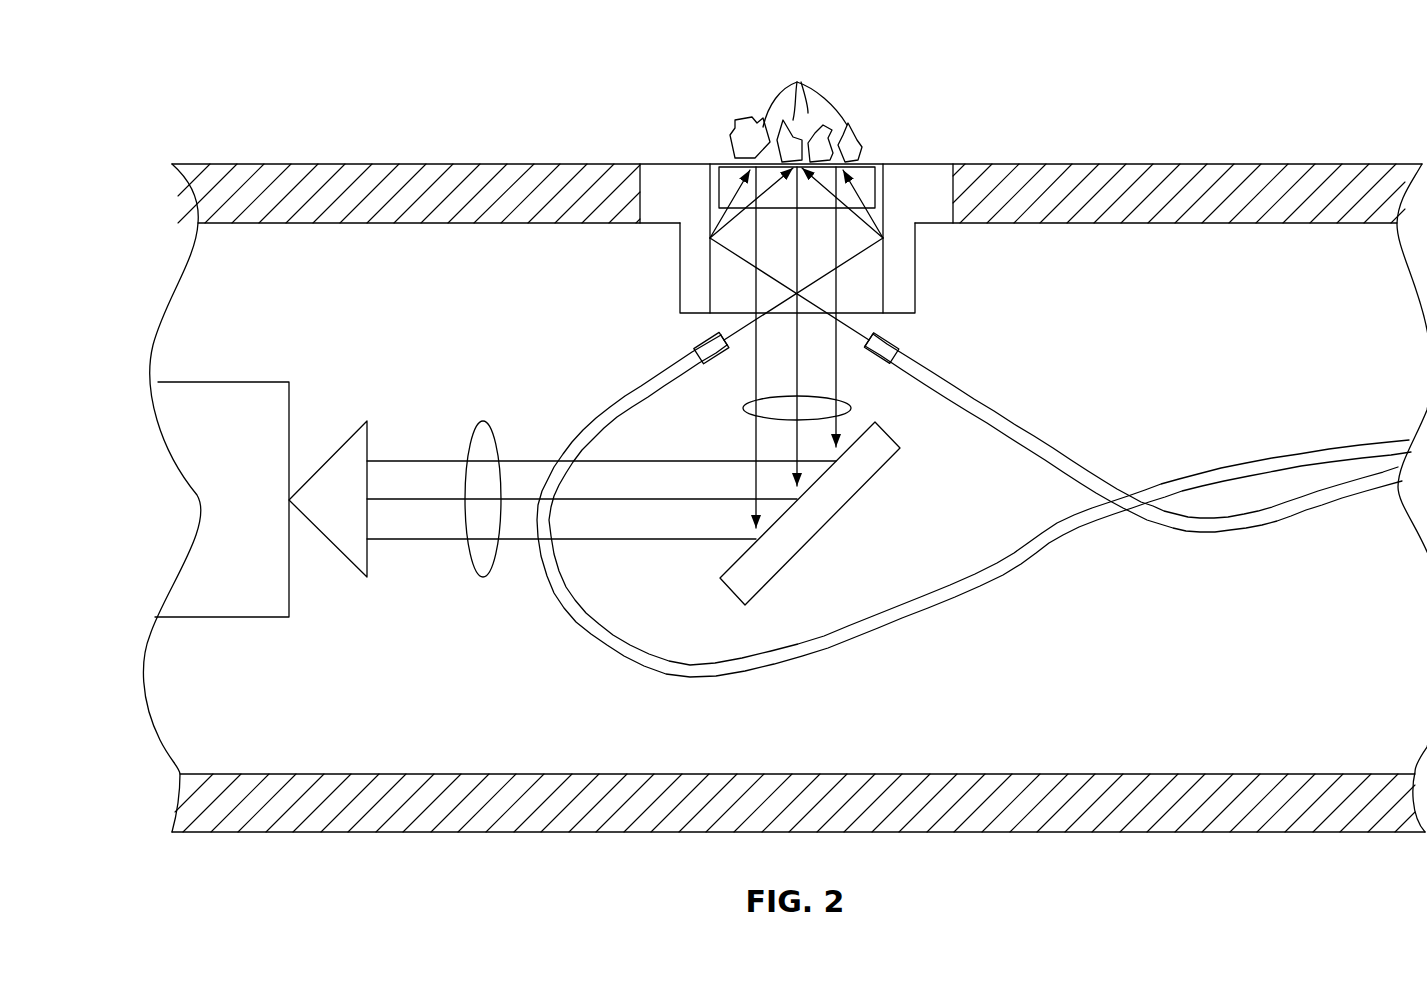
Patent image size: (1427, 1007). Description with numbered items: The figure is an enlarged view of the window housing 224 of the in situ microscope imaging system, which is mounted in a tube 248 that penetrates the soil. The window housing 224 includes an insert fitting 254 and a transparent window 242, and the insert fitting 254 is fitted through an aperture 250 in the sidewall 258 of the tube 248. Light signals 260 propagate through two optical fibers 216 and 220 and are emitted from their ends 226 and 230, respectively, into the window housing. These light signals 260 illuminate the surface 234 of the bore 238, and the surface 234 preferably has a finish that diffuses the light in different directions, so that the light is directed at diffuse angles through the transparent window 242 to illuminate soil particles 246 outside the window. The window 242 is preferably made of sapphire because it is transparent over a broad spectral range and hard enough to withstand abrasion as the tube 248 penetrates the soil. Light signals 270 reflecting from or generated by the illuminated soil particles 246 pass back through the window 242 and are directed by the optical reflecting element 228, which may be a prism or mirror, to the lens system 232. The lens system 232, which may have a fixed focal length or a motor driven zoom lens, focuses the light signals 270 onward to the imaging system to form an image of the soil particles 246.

The optical fiber 216 is at (1010, 422).
The optical fiber 220 is at (985, 574).
The window housing 224 is at (917, 186).
The end of optical fiber 226 is at (890, 338).
The optical reflecting element 228 is at (840, 497).
The end of optical fiber 230 is at (712, 338).
The lens system 232 is at (222, 400).
The surface of bore 234 is at (878, 262).
The bore 238 is at (730, 273).
The transparent window 242 is at (865, 178).
The soil particles 246 is at (797, 82).
The tube 248 is at (1213, 164).
The aperture 250 is at (641, 178).
The insert fitting 254 is at (670, 190).
The sidewall 258 is at (1097, 180).
The light signals 260 is at (770, 282).
The light signals 270 is at (483, 420).